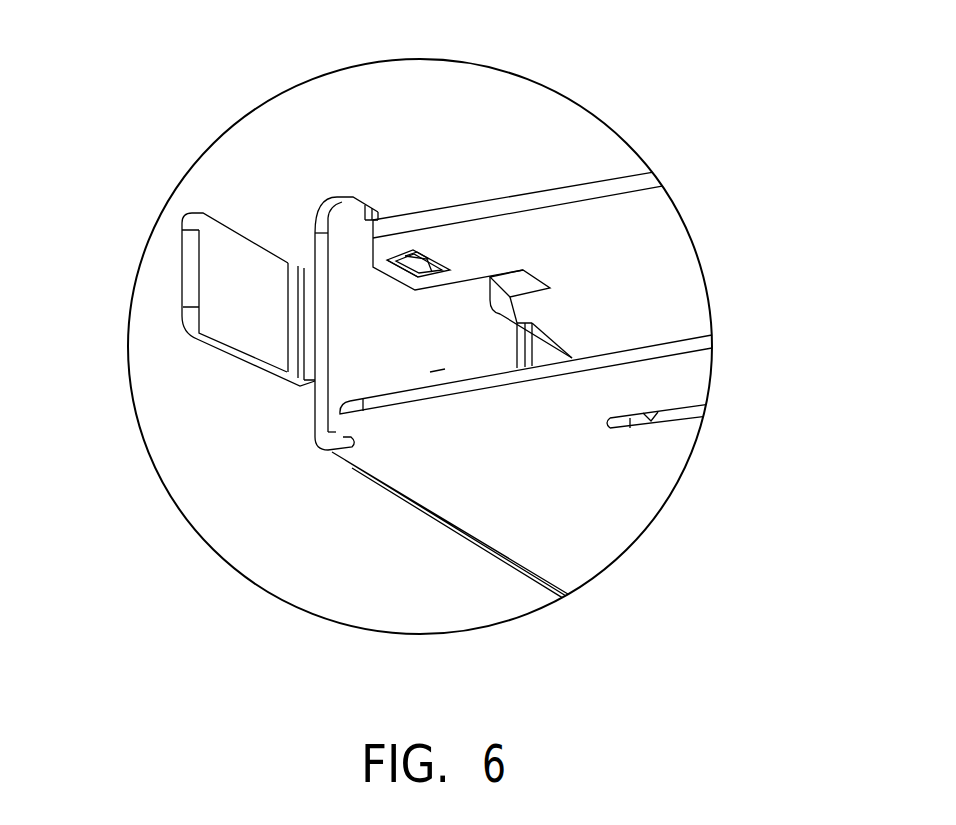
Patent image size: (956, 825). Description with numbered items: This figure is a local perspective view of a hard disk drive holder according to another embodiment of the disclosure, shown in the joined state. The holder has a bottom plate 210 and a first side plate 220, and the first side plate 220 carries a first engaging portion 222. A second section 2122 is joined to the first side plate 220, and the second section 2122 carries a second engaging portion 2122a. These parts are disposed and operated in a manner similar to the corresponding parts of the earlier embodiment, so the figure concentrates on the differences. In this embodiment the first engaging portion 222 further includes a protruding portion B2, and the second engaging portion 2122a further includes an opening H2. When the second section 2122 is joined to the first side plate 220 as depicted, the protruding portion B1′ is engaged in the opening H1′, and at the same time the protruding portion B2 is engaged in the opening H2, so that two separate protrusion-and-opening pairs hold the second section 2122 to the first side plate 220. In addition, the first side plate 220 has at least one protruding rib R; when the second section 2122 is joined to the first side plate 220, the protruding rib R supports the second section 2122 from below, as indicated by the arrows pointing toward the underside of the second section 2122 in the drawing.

The bottom plate 210 is at (717, 373).
The second section 2122 is at (588, 223).
The second engaging portion 2122a is at (463, 259).
The protruding rib R is at (517, 322).
The opening H2 is at (438, 256).
The opening H1′ is at (437, 307).
The protruding portion B1′ is at (393, 270).
The protruding portion B2 is at (418, 258).
The first side plate 220 is at (343, 343).
The first engaging portion 222 is at (402, 310).